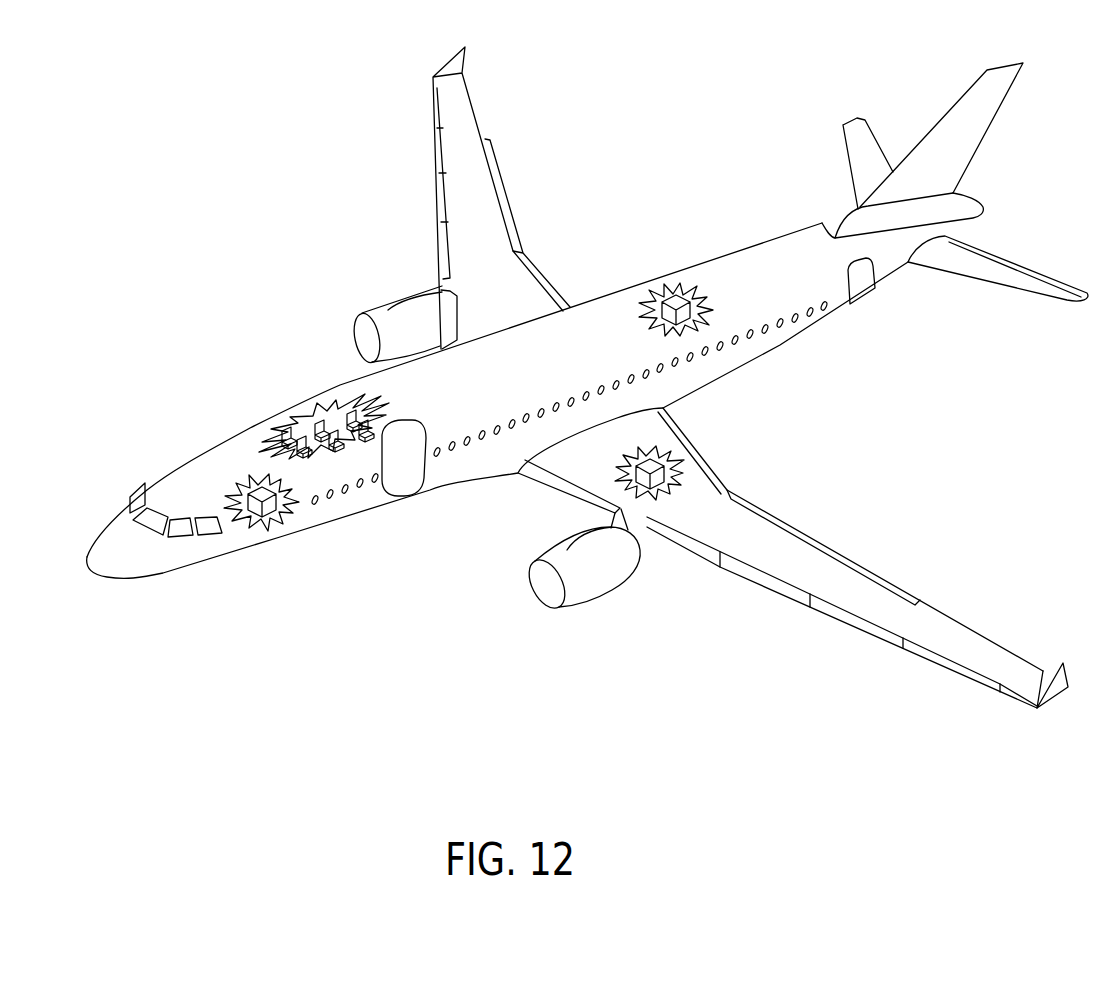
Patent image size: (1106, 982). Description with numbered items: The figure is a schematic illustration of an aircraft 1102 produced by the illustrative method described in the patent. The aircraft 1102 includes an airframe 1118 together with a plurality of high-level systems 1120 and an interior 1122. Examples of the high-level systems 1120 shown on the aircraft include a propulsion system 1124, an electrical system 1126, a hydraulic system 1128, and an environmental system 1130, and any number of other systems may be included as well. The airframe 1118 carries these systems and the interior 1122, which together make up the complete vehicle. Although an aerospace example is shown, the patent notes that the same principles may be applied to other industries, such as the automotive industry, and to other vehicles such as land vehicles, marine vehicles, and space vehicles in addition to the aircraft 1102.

The aircraft 1102 is at (587, 377).
The airframe 1118 is at (292, 375).
The high-level systems 1120 is at (878, 440).
The interior 1122 is at (295, 427).
The propulsion system 1124 is at (378, 313).
The electrical system 1126 is at (262, 495).
The hydraulic system 1128 is at (652, 458).
The environmental system 1130 is at (677, 303).